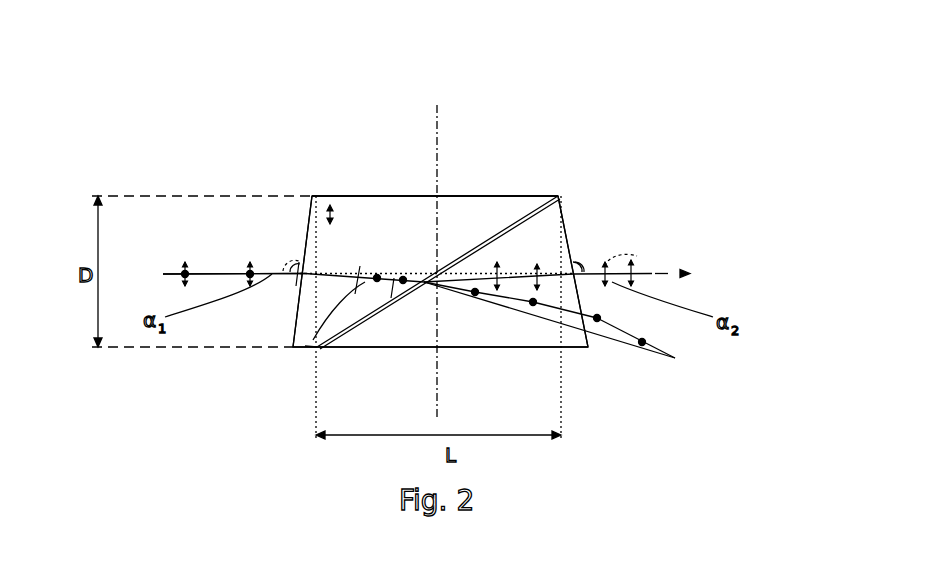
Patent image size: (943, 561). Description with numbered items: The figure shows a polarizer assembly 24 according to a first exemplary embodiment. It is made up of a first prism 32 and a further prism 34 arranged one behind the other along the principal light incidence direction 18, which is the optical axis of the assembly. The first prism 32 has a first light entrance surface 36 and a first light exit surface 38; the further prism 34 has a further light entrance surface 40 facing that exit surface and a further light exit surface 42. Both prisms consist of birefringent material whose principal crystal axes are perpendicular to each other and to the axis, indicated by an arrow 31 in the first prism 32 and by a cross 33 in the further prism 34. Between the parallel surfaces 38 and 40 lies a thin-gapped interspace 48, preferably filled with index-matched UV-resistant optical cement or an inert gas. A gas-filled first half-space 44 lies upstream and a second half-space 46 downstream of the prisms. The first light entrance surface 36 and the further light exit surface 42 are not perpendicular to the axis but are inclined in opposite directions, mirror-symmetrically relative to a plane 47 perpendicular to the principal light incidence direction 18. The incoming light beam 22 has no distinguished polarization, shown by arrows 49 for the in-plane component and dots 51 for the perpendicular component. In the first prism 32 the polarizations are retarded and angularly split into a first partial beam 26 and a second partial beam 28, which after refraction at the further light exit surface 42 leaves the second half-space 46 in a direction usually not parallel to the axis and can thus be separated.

The principal light incidence direction 18 is at (678, 272).
The light beam 22 is at (165, 272).
The polarizer assembly 24 is at (523, 148).
The first partial beam 26 is at (593, 273).
The second partial beam 28 is at (652, 350).
The arrow 31 is at (314, 208).
The first prism 32 is at (353, 214).
The cross 33 is at (548, 334).
The further prism 34 is at (516, 337).
The first light entrance surface 36 is at (304, 241).
The first light exit surface 38 is at (503, 228).
The further light entrance surface 40 is at (410, 284).
The further light exit surface 42 is at (578, 224).
The first half-space 44 is at (198, 148).
The second half-space 46 is at (693, 185).
The plane 47 is at (437, 128).
The interspace 48 is at (368, 314).
The arrows 49 is at (310, 345).
The dots 51 is at (398, 277).